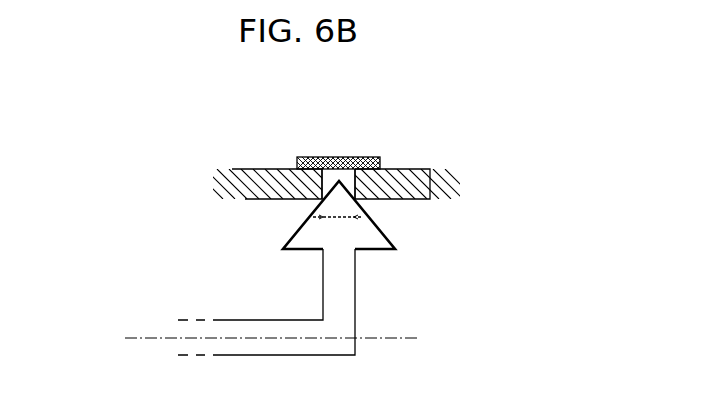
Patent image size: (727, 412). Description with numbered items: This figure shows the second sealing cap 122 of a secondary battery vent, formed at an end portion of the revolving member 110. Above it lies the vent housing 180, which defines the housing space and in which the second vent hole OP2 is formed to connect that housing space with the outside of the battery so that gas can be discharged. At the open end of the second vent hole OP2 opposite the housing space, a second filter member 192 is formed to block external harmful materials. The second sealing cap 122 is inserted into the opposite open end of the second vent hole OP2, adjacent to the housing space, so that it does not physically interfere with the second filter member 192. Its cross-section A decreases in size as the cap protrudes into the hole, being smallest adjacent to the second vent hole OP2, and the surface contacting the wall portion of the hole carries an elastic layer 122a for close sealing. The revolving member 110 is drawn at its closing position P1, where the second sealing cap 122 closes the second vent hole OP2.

The vent housing 180 is at (415, 170).
The second filter member 192 is at (372, 156).
The second vent hole OP2 is at (314, 156).
The second sealing cap 122 is at (308, 238).
The elastic layer 122a is at (305, 223).
The cross-section A is at (344, 217).
The revolving member 110 is at (350, 295).
The closing position P1 is at (262, 335).